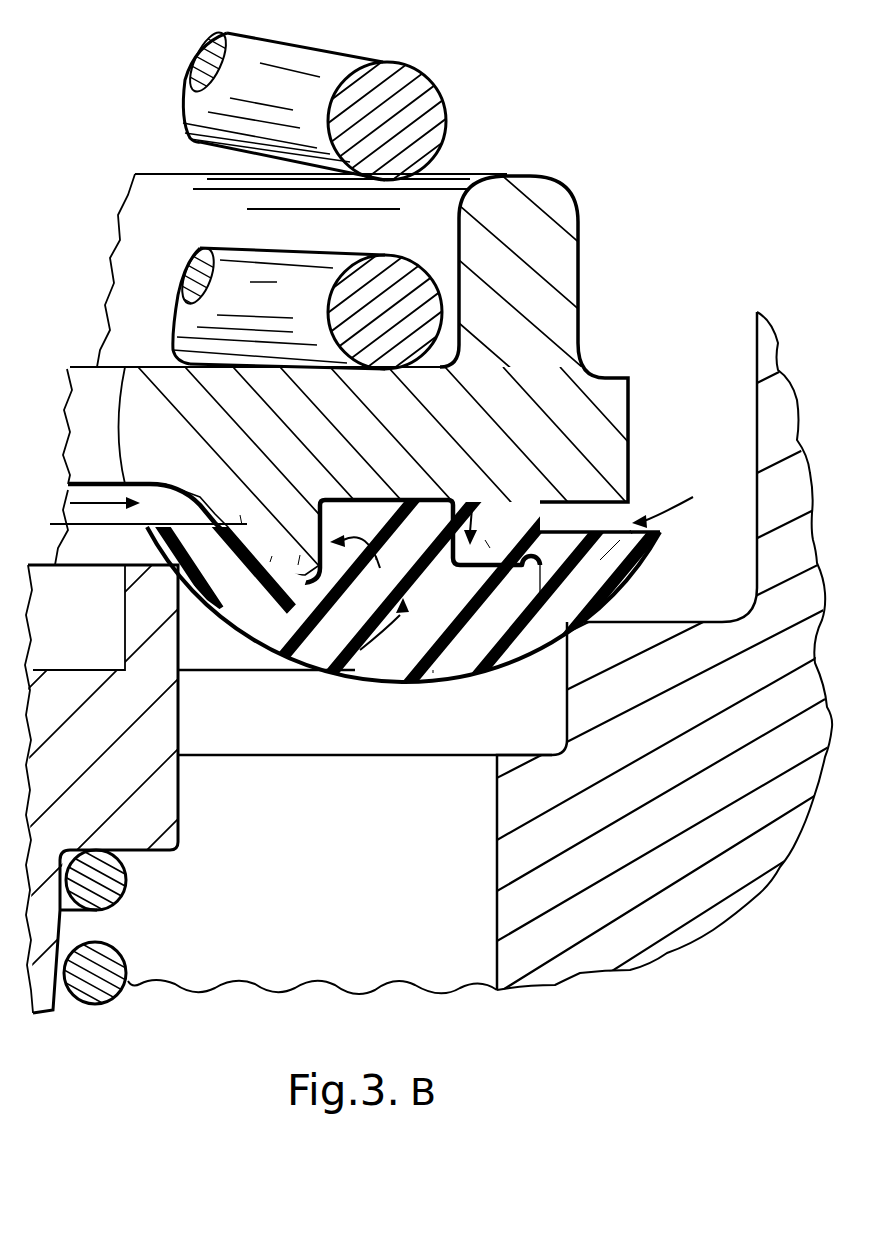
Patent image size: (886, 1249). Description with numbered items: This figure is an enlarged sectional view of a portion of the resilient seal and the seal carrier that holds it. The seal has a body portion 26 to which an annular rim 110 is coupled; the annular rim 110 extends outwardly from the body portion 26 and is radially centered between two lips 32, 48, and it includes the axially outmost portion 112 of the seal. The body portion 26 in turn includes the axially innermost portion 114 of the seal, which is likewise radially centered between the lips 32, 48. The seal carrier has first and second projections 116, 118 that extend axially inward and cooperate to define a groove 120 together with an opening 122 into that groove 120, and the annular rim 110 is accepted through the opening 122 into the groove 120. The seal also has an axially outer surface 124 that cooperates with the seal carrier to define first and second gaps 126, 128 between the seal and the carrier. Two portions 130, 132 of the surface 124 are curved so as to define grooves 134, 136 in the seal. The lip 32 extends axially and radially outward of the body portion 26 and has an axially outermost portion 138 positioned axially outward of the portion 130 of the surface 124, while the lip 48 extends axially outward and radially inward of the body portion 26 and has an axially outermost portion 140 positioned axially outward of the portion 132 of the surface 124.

The body portion 26 is at (440, 612).
The lip 32 is at (600, 590).
The lip 48 is at (230, 585).
The annular rim 110 is at (374, 513).
The axially outmost portion 112 is at (390, 500).
The axially innermost portion 114 is at (433, 673).
The first projection 116 is at (300, 555).
The second projection 118 is at (485, 540).
The groove 120 is at (352, 520).
The opening 122 is at (360, 650).
The axially outer surface 124 is at (240, 515).
The first gap 126 is at (70, 503).
The second gap 128 is at (683, 502).
The portion of surface 130 is at (270, 562).
The portion of surface 132 is at (540, 600).
The groove 134 is at (376, 560).
The groove 136 is at (472, 508).
The axially outermost portion 138 is at (630, 530).
The axially outermost portion 140 is at (304, 507).